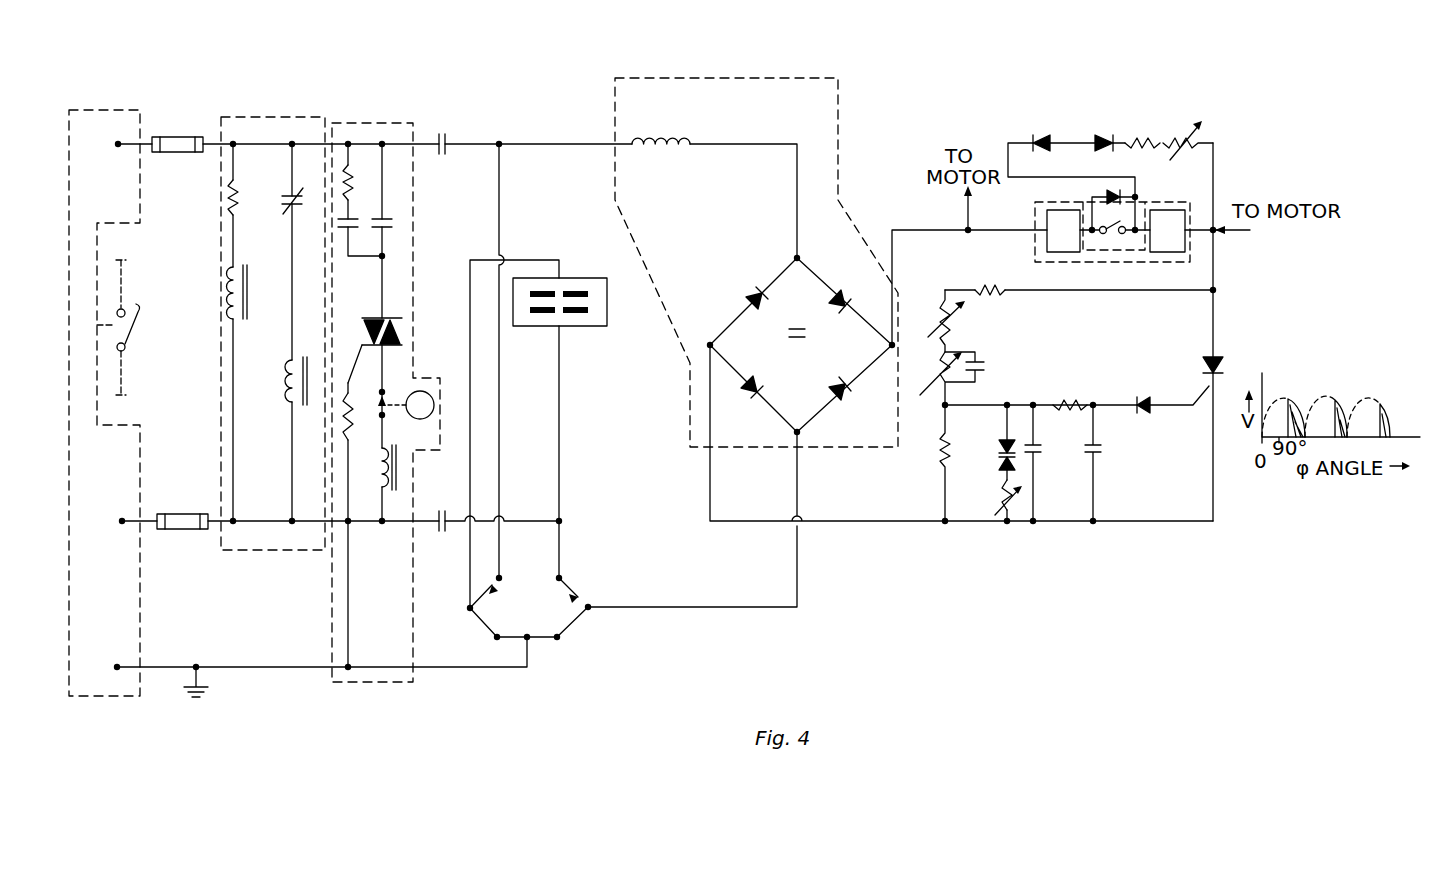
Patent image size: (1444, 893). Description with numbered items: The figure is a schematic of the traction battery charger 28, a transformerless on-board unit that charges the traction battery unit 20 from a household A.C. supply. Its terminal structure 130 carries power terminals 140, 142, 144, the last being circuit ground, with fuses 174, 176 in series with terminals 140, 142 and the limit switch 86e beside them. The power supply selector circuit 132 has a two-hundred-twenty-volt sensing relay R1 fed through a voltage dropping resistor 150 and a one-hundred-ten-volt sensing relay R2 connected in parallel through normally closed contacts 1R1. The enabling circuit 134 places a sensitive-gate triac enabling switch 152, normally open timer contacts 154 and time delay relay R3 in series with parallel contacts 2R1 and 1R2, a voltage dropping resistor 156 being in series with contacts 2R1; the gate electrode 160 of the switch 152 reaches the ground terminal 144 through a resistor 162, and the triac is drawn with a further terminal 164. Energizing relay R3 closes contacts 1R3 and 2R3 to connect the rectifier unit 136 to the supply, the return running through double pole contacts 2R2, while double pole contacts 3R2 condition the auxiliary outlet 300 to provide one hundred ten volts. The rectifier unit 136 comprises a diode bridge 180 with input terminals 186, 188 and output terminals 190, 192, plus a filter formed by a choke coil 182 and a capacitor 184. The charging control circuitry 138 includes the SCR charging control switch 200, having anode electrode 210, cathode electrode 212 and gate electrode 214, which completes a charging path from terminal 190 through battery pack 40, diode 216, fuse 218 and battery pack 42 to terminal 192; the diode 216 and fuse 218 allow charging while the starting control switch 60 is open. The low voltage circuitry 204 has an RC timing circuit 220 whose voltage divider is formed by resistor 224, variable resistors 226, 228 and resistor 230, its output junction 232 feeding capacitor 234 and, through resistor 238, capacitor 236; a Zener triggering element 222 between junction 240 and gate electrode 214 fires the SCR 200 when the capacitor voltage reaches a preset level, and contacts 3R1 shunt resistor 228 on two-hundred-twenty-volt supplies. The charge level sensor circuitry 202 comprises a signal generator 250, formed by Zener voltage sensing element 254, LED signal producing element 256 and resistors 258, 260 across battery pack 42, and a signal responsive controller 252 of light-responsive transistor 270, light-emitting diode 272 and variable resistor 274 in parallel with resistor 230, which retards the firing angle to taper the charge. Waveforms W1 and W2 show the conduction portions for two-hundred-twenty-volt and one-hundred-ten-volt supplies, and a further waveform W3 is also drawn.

The traction battery charger 28 is at (450, 74).
The terminal structure 130 is at (100, 705).
The power supply selector circuit 132 is at (278, 552).
The charge enabling circuit 134 is at (346, 683).
The rectifier unit 136 is at (735, 78).
The charging control circuitry 138 is at (1256, 152).
The power terminal 140 is at (120, 143).
The power terminal 142 is at (122, 521).
The power terminal 144 is at (117, 667).
The fuse 174 is at (172, 137).
The fuse 176 is at (182, 514).
The limit switch 86e is at (136, 338).
The voltage dropping resistor 150 is at (228, 196).
The 220-volt sensing relay R1 is at (228, 300).
The normally closed contacts of relay R1 1R1 is at (287, 196).
The 110-volt sensing relay R2 is at (288, 382).
The voltage dropping resistor 156 is at (348, 165).
The contacts of relay R1 2R1 is at (353, 218).
The contacts of relay R2 1R2 is at (385, 220).
The normally open contacts of relay R3 1R3 is at (436, 133).
The normally open contacts of relay R3 2R3 is at (442, 533).
The gated A.C. enabling switch 152 is at (396, 334).
The triac terminal 164 is at (376, 318).
The gate electrode 160 is at (365, 347).
The normally open timer contacts 154 is at (380, 396).
The resistor 162 is at (346, 433).
The relay R3 is at (398, 468).
The auxiliary 110-volt receptacle 300 is at (572, 328).
The double pole contacts of relay R2 3R2 is at (469, 610).
The double pole contacts of relay R2 2R2 is at (578, 618).
The choke coil 182 is at (662, 142).
The diode bridge 180 is at (758, 280).
The input terminal 186 is at (798, 257).
The capacitor 184 is at (790, 332).
The output terminal 192 is at (708, 344).
The input terminal 188 is at (797, 434).
The output terminal 190 is at (894, 345).
The traction battery unit 20 is at (1150, 204).
The battery pack 40 is at (1064, 252).
The battery pack 42 is at (1170, 252).
The starting control switch 60 is at (1104, 223).
The diode 216 is at (1112, 188).
The fuse 218 is at (1134, 200).
The voltage sensing element 254 is at (1047, 132).
The voltage responsive signal producing element 256 is at (1104, 130).
The resistor 258 is at (1149, 132).
The resistor 260 is at (1198, 148).
The voltage responsive signal generator 250 is at (1214, 136).
The charge level sensor circuitry 202 is at (1130, 126).
The variable resistor 226 is at (942, 300).
The resistor 224 is at (1002, 292).
The normally open contacts of relay R1 3R1 is at (980, 358).
The output junction 232 is at (948, 404).
The variable resistor 228 is at (922, 407).
The RC timing circuit 220 is at (1108, 323).
The resistor 238 is at (1063, 398).
The junction 240 is at (1096, 405).
The triggering element 222 is at (1140, 408).
The anode electrode 210 is at (1207, 356).
The gate electrode 214 is at (1206, 384).
The cathode electrode 212 is at (1227, 374).
The charging control switch 200 is at (1230, 354).
The resistor 230 is at (942, 462).
The light-responsive transistor 270 is at (1004, 442).
The light-emitting diode 272 is at (1000, 469).
The variable resistor 274 is at (1008, 515).
The signal responsive controller 252 is at (992, 477).
The capacitor 234 is at (1046, 448).
The capacitor 236 is at (1104, 446).
The low voltage circuitry 204 is at (1062, 526).
The waveform W1 is at (1292, 396).
The waveform W2 is at (1336, 398).
The waveform W3 is at (1382, 402).